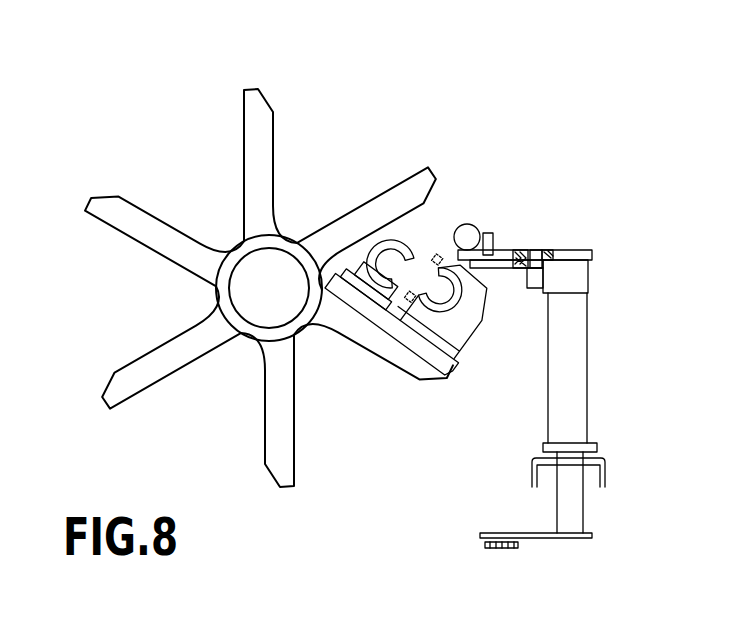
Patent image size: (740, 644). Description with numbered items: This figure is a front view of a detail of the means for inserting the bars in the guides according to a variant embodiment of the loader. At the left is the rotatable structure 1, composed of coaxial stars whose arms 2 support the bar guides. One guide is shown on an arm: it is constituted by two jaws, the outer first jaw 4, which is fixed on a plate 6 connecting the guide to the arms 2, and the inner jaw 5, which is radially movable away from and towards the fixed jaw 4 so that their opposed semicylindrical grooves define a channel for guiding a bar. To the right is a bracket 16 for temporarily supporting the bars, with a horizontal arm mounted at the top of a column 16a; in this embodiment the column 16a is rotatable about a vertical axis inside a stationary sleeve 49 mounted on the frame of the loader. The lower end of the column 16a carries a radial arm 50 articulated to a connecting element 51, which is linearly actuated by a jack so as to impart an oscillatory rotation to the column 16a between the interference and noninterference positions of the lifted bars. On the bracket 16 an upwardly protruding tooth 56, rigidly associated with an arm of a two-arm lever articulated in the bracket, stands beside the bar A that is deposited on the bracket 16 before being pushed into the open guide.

The structure 1 is at (340, 130).
The arms 2 is at (397, 203).
The first jaw 4 is at (457, 317).
The inner jaw 5 is at (353, 258).
The plate 6 is at (387, 325).
The bracket 16 is at (523, 250).
The column 16a is at (562, 497).
The stationary sleeve 49 is at (568, 393).
The radial arm 50 is at (540, 538).
The connecting element 51 is at (497, 550).
The tooth 56 is at (498, 233).
The bar A is at (462, 230).